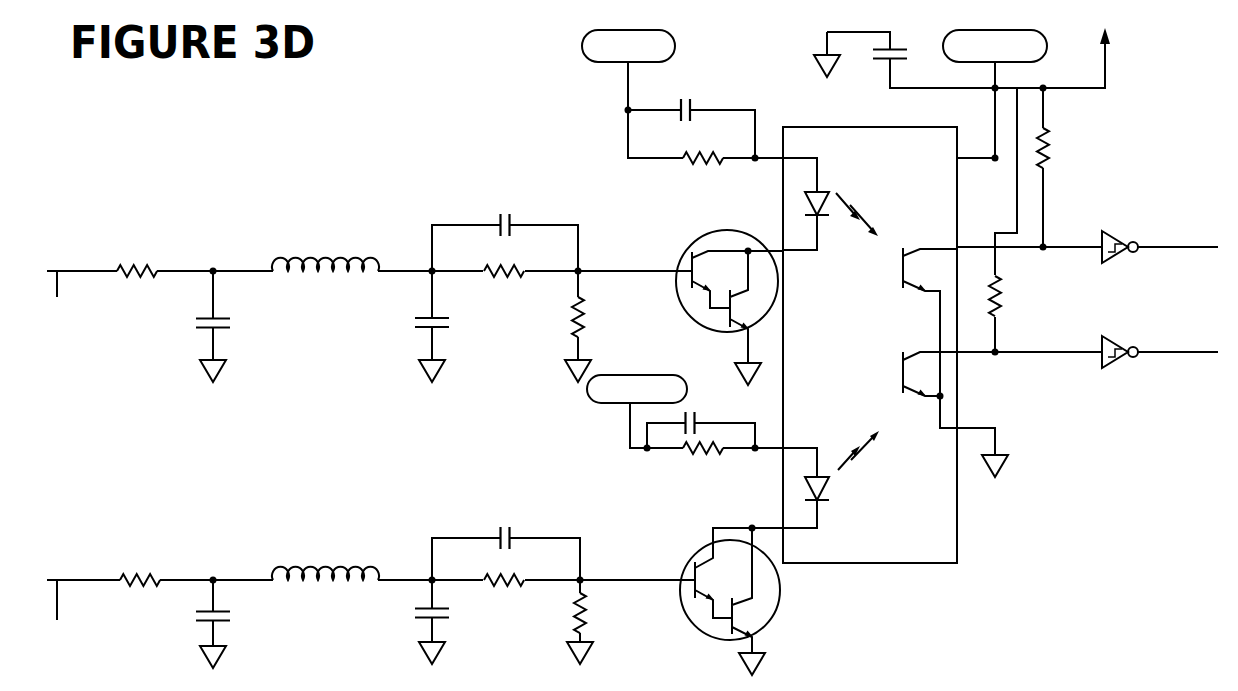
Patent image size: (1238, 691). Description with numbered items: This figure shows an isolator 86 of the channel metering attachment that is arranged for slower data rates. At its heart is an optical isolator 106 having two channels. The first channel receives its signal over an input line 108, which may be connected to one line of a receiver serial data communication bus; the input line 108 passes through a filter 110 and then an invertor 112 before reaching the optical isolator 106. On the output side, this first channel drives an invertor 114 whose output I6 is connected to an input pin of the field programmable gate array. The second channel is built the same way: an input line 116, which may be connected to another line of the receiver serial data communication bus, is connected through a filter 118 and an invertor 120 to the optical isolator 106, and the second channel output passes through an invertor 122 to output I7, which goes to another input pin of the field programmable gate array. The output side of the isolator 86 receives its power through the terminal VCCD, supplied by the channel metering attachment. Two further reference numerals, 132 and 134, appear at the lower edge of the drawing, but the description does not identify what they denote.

The isolator 86 is at (503, 99).
The optical isolator 106 is at (815, 565).
The input line 108 is at (77, 299).
The filter 110 is at (373, 238).
The invertor 112 is at (700, 235).
The invertor 114 is at (1124, 240).
The input line 116 is at (76, 616).
The filter 118 is at (375, 533).
The invertor 120 is at (688, 563).
The invertor 122 is at (1118, 363).
The ground reference 132 is at (642, 682).
The ground reference 134 is at (884, 682).